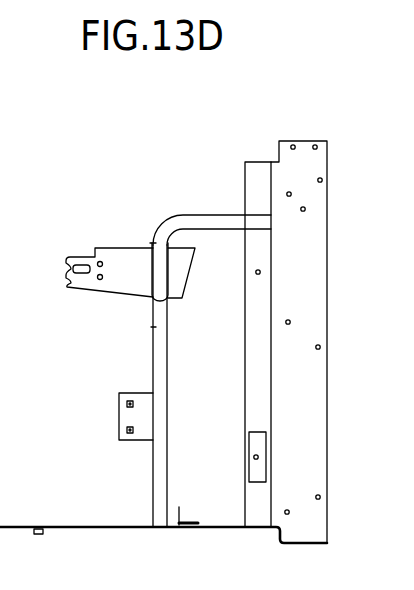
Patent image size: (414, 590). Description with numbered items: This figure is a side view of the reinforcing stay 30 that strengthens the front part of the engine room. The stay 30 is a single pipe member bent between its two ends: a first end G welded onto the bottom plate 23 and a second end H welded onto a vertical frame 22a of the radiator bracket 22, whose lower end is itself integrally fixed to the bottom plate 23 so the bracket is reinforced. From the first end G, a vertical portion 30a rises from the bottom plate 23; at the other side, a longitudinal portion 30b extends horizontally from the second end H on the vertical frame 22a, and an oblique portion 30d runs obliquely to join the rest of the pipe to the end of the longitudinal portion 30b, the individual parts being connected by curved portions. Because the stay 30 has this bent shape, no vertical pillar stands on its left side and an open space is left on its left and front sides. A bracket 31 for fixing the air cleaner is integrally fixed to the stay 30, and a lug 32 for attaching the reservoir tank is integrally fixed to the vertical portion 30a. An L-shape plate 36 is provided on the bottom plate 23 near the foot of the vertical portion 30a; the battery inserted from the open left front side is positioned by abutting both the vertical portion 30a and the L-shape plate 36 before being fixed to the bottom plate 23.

The radiator bracket 22 is at (307, 121).
The vertical frame 22a is at (262, 165).
The bottom plate 23 is at (55, 525).
The reinforcing stay 30 is at (172, 321).
The vertical portion 30a is at (155, 355).
The longitudinal portion 30b is at (227, 216).
The oblique portion 30d is at (154, 243).
The bracket 31 is at (105, 248).
The lug 32 is at (125, 419).
The L-shape plate 36 is at (181, 514).
The first end G is at (150, 525).
The second end H is at (271, 223).